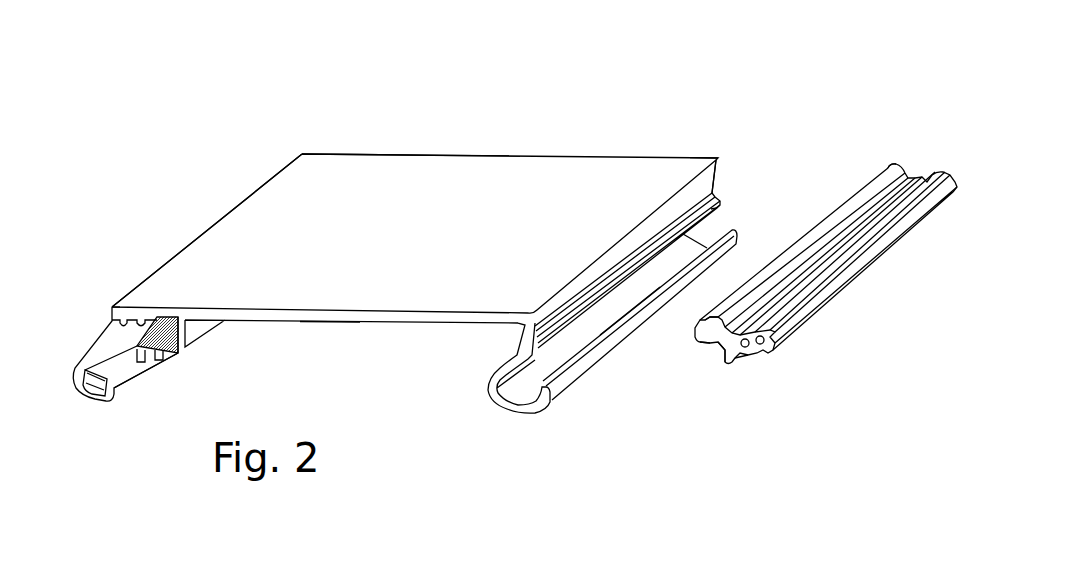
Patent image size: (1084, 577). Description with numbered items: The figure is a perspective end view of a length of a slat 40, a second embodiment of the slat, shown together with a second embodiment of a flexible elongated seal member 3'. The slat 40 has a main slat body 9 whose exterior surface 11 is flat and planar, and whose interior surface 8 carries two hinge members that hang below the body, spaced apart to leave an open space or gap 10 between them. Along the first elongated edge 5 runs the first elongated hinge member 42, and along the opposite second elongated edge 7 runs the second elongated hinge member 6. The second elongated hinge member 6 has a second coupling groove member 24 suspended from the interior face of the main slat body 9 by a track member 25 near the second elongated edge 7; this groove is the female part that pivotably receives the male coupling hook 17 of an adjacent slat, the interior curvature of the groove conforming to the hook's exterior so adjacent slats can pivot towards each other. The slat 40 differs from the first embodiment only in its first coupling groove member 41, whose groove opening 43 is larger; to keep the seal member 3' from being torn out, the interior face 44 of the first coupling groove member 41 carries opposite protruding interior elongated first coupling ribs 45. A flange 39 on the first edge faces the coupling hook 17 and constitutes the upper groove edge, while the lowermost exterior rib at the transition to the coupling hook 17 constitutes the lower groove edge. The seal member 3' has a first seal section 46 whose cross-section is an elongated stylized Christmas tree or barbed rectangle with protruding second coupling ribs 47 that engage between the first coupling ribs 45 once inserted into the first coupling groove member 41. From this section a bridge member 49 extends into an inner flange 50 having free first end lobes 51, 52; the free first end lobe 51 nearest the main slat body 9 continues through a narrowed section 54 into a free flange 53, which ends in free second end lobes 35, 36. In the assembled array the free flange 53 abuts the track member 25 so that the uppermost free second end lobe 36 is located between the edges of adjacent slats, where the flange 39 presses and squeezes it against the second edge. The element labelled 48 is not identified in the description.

The flexible elongated seal member 3' is at (911, 91).
The first elongated edge 5 is at (222, 220).
The second elongated hinge member 6 is at (570, 315).
The second elongated edge 7 is at (720, 157).
The interior surface 8 is at (324, 323).
The main slat body 9 is at (328, 168).
The open space or gap 10 is at (295, 365).
The exterior surface 11 is at (400, 175).
The coupling hook 17 is at (83, 387).
The second coupling groove member 24 is at (502, 404).
The track member 25 is at (512, 334).
The free second end lobe 35 is at (640, 315).
The free second end lobe 36 is at (707, 317).
The flange 39 is at (107, 305).
The slat 40 is at (553, 130).
The first coupling groove member 41 is at (177, 362).
The first elongated hinge member 42 is at (143, 392).
The groove opening 43 is at (138, 339).
The interior face 44 is at (107, 392).
The first coupling ribs 45 is at (137, 313).
The first seal section 46 is at (814, 287).
The second coupling ribs 47 is at (750, 300).
The clip far end 48 is at (840, 205).
The bridge member 49 is at (802, 262).
The inner flange 50 is at (731, 368).
The free first end lobe 51 is at (718, 320).
The free first end lobe 52 is at (722, 368).
The free flange 53 is at (694, 328).
The narrowed section 54 is at (706, 362).